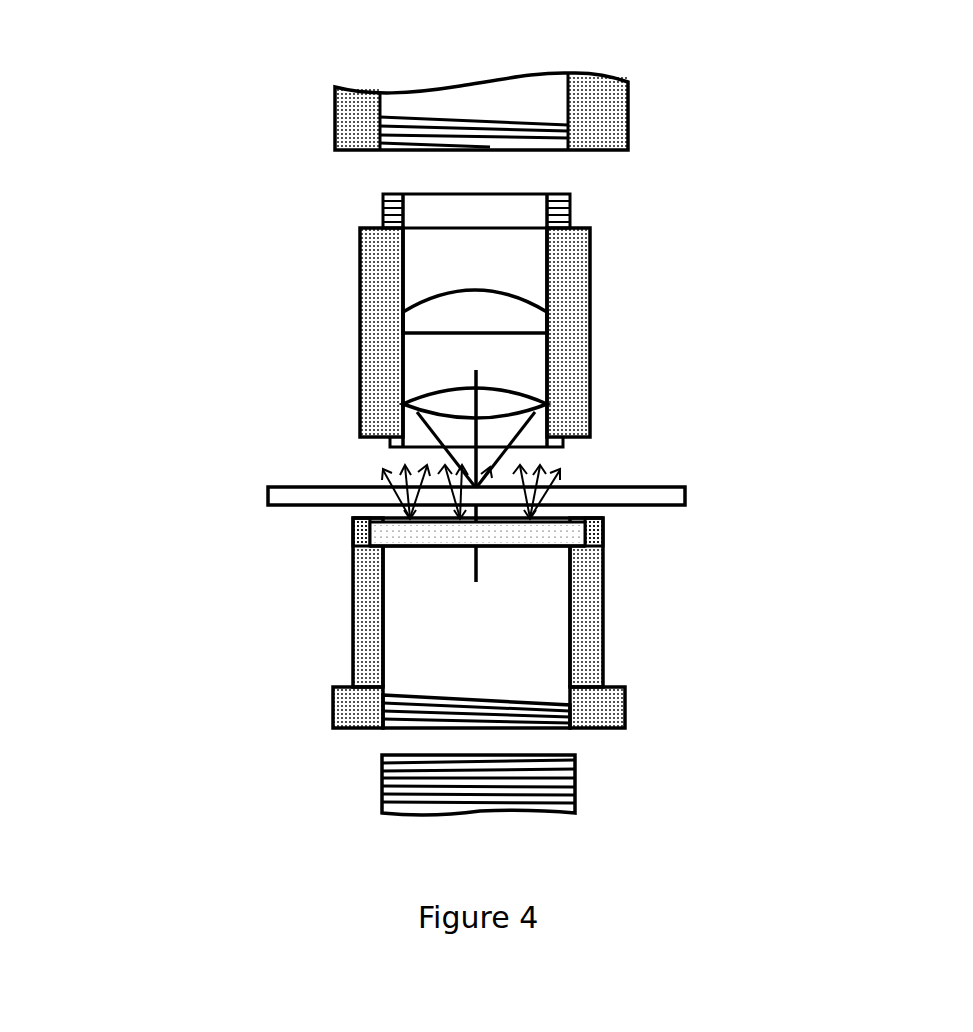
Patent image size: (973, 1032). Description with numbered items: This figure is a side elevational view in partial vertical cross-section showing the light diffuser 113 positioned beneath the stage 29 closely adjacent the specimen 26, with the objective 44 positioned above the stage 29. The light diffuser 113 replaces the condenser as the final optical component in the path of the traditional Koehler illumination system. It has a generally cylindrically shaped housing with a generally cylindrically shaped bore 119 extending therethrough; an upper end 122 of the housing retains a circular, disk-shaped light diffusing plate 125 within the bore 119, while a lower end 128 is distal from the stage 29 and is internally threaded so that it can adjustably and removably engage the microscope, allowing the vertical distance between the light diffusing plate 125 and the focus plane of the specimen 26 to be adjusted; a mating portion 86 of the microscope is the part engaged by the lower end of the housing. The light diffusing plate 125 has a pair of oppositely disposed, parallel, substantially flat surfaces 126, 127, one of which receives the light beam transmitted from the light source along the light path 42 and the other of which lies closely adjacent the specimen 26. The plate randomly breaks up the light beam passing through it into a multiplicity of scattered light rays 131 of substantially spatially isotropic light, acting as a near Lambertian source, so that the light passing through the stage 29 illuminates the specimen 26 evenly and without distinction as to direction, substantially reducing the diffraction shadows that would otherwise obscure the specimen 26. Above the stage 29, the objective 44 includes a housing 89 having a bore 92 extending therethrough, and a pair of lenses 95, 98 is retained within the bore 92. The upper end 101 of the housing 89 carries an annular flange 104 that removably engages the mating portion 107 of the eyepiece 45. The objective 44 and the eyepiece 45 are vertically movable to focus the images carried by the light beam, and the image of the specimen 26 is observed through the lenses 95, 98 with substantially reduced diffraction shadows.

The eyepiece 45 is at (635, 93).
The mating portion of the eyepiece 107 is at (375, 135).
The annular flange 104 is at (590, 197).
The upper end of housing 101 is at (603, 257).
The objective 44 is at (549, 369).
The housing 89 is at (348, 297).
The lens 95 is at (435, 307).
The bore 92 is at (415, 350).
The lens 98 is at (410, 393).
The light path 42 is at (480, 378).
The stage 29 is at (673, 473).
The specimen 26 is at (478, 485).
The scattered light rays 131 is at (433, 460).
The flat surface 127 is at (597, 517).
The light diffusing plate 125 is at (385, 533).
The upper end of housing 122 is at (607, 557).
The flat surface 126 is at (370, 549).
The light diffuser 113 is at (530, 594).
The bore 119 is at (453, 652).
The lower end of housing 128 is at (320, 693).
The mating portion of the microscope 86 is at (583, 781).